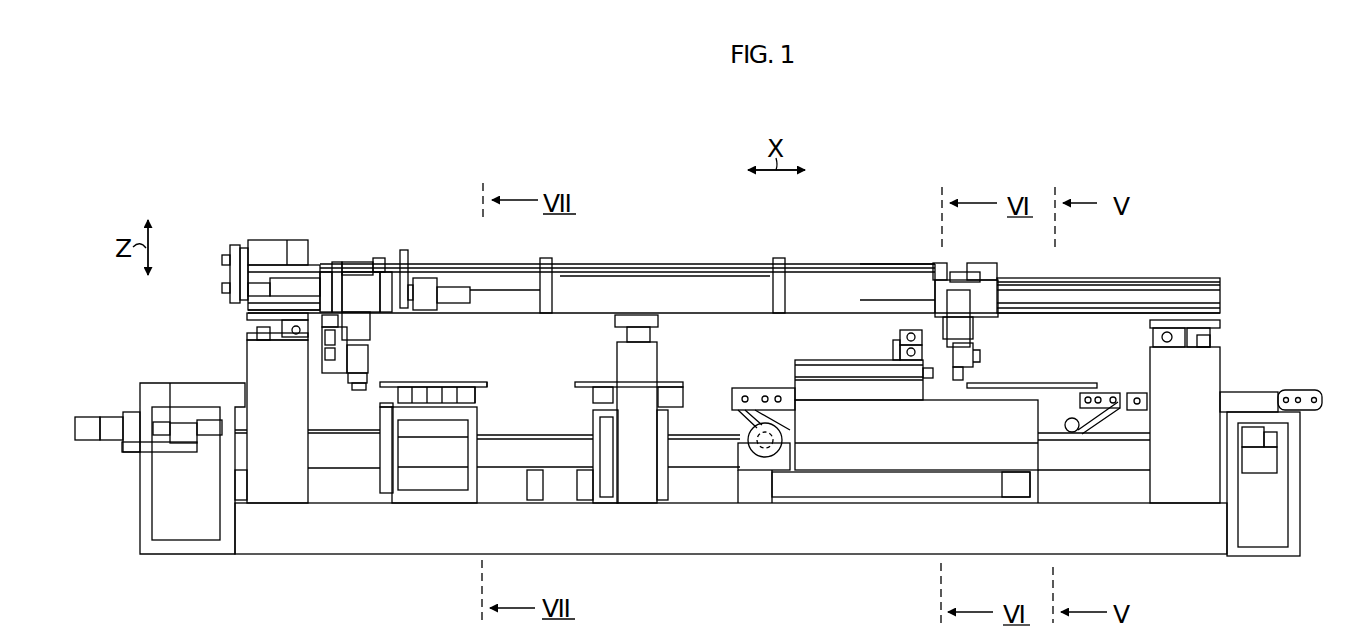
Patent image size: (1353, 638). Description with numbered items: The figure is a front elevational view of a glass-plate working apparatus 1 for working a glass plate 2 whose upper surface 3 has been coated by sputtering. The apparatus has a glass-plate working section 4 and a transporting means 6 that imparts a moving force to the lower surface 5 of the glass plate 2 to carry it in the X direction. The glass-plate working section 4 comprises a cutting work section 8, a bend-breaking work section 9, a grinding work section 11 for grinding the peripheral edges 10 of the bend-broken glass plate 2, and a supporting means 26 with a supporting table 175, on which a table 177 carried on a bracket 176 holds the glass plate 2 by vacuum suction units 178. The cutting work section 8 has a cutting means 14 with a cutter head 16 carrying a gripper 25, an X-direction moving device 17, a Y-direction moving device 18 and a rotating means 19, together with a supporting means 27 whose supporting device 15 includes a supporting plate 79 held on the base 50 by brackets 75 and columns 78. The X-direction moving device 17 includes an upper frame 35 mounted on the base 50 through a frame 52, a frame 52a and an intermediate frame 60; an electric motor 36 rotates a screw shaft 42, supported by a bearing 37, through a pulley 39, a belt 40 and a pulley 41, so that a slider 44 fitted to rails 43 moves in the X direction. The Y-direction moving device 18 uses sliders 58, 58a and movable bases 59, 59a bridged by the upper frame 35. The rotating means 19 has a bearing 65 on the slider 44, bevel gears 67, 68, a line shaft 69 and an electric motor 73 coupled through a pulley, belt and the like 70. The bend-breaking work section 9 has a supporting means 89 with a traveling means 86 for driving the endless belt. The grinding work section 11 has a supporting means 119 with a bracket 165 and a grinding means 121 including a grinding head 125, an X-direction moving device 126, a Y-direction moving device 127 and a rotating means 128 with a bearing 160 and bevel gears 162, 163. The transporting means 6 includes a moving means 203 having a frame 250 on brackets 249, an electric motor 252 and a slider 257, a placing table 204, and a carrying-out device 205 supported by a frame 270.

The glass-plate working apparatus 1 is at (1190, 208).
The glass plate 2 is at (453, 384).
The upper surface 3 is at (398, 382).
The glass-plate working section 4 is at (813, 330).
The lower surface 5 is at (479, 390).
The transporting means 6 is at (108, 410).
The cutting work section 8 is at (1048, 415).
The bend-breaking work section 9 is at (803, 357).
The peripheral edges 10 is at (483, 384).
The grinding work section 11 is at (367, 398).
The cutting means 14 is at (970, 343).
The supporting device 15 is at (1098, 388).
The cutter head 16 is at (970, 370).
The X-direction moving device 17 is at (880, 293).
The Y-direction moving device 18 is at (1224, 338).
The rotating means 19 is at (860, 262).
The gripper 25 is at (943, 322).
The supporting means 26 is at (590, 400).
The supporting means 27 is at (1118, 388).
The upper frame 35 is at (1118, 293).
The electric motor 36 is at (265, 248).
The bearing 37 is at (248, 312).
The pulley 39 is at (228, 254).
The belt 40 is at (231, 244).
The pulley 41 is at (228, 288).
The screw shaft 42 is at (287, 290).
The rails 43 is at (1178, 281).
The slider 44 is at (738, 288).
The base 50 is at (816, 547).
The frame 52 is at (267, 487).
The frame 52a is at (1185, 495).
The slider 58 is at (262, 345).
The slider 58a is at (1212, 330).
The movable base 59 is at (257, 328).
The movable base 59a is at (1220, 322).
The frame 60 is at (640, 493).
The bearing 65 is at (997, 298).
The bevel gear 67 is at (960, 268).
The bevel gear 68 is at (970, 268).
The line shaft 69 is at (692, 264).
The pulley, belt, and the like 70 is at (405, 250).
The electric motor 73 is at (448, 290).
The brackets 75 is at (1040, 490).
The columns 78 is at (1000, 430).
The supporting plate 79 is at (1082, 415).
The traveling means 86 is at (740, 450).
The supporting means 89 is at (782, 383).
The supporting means 119 is at (388, 406).
The grinding means 121 is at (382, 352).
The grinding head 125 is at (347, 390).
The X-direction moving device 126 is at (503, 288).
The Y-direction moving device 127 is at (1168, 343).
The rotating means 128 is at (545, 257).
The bearing 160 is at (347, 268).
The bevel gear 162 is at (350, 293).
The bevel gear 163 is at (362, 270).
The bracket 165 is at (433, 493).
The supporting table 175 is at (672, 398).
The bracket 176 is at (603, 500).
The table 177 is at (668, 408).
The vacuum suction units 178 is at (602, 387).
The moving means 203 is at (113, 445).
The placing table 204 is at (1295, 430).
The carrying-out device 205 is at (223, 397).
The brackets 249 is at (560, 497).
The frame 250 is at (1248, 468).
The electric motor 252 is at (87, 440).
The slider 257 is at (513, 432).
The frame 270 is at (153, 547).